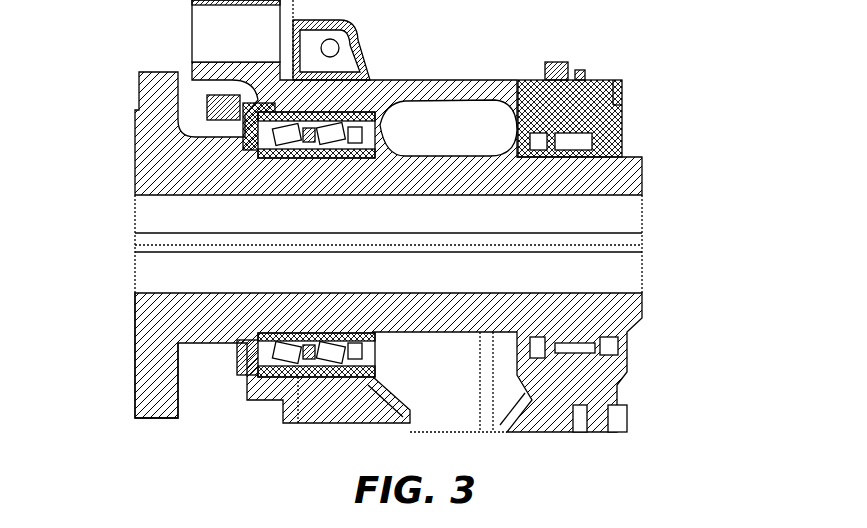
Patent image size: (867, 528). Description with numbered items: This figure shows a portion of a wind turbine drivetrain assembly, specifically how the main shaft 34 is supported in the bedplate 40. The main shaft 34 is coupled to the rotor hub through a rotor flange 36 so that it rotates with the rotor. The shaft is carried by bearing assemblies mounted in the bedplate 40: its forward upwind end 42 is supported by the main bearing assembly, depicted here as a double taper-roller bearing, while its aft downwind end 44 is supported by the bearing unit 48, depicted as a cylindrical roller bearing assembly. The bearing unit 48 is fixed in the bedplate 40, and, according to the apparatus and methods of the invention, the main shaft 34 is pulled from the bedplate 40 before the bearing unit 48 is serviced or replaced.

The main shaft 34 is at (405, 322).
The rotor flange 36 is at (135, 343).
The bedplate support frame 40 is at (267, 90).
The forward upwind end 42 is at (105, 250).
The aft downwind end 44 is at (673, 250).
The bearing unit 48 is at (578, 125).